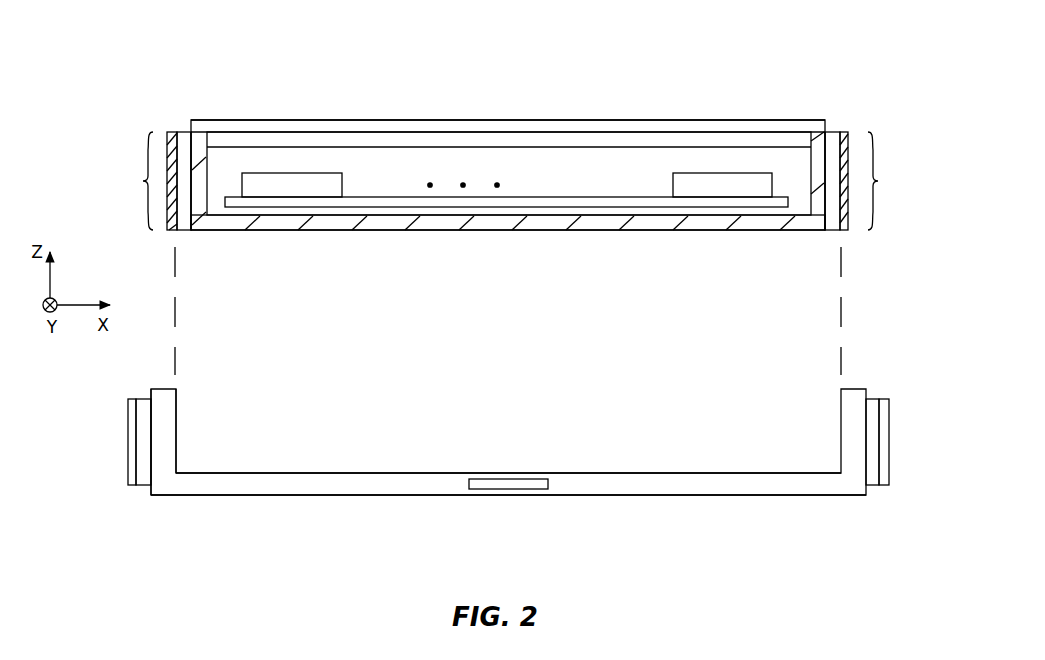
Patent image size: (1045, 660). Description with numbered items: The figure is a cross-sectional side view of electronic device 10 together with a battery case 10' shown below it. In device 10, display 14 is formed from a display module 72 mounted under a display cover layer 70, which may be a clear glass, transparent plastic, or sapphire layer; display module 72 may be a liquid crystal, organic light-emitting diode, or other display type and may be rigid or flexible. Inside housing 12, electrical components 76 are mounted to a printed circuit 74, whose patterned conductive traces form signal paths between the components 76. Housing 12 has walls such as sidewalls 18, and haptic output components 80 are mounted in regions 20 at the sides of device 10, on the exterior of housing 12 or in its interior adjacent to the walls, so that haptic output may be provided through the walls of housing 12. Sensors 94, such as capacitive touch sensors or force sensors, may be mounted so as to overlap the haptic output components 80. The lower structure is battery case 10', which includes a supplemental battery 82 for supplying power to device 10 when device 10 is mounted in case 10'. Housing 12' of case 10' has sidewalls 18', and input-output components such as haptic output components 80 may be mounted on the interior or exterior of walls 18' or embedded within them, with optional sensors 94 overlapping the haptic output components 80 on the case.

The electronic device 10 is at (508, 131).
The display 14 is at (598, 106).
The display cover layer 70 is at (388, 129).
The display module 72 is at (323, 139).
The printed circuit 74 is at (410, 197).
The electrical components 76 is at (341, 183).
The sidewalls 18 is at (508, 181).
The housing 12 is at (508, 254).
The sensors 94 is at (172, 232).
The haptic output components 80 is at (183, 142).
The regions 20 is at (509, 181).
The battery case 10' is at (550, 426).
The sidewalls 18' is at (132, 477).
The housing 12' is at (508, 519).
The battery 82 is at (505, 491).